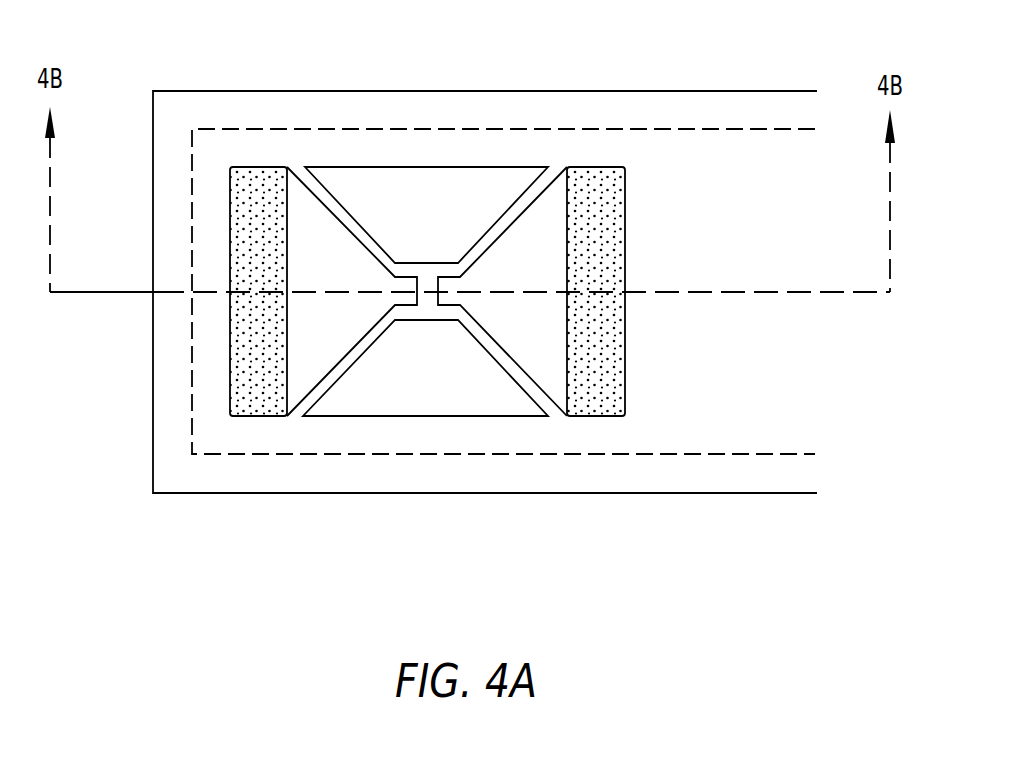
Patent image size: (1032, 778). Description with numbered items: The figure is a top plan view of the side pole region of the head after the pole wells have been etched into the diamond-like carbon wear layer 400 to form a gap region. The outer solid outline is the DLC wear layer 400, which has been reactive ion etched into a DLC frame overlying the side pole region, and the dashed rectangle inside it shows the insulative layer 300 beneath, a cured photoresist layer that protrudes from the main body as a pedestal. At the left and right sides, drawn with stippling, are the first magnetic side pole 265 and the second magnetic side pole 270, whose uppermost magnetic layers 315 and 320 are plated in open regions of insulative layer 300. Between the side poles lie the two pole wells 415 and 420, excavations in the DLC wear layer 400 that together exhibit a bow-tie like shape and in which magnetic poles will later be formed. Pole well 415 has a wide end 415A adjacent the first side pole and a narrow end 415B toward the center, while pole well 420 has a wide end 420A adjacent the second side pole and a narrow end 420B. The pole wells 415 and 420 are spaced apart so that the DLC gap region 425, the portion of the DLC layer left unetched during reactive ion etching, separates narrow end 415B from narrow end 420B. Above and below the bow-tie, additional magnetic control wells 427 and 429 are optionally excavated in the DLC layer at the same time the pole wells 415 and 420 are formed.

The first magnetic side pole 265 is at (247, 203).
The second magnetic side pole 270 is at (607, 208).
The insulative layer 300 is at (192, 362).
The magnetic layer 315 is at (262, 182).
The magnetic layer 320 is at (593, 185).
The DLC wear layer 400 is at (153, 188).
The pole well 415 is at (323, 206).
The wide end 415A is at (257, 363).
The narrow end 415B is at (403, 297).
The pole well 420 is at (527, 208).
The wide end 420A is at (597, 363).
The narrow end 420B is at (447, 297).
The DLC gap region 425 is at (420, 334).
The magnetic control well 427 is at (420, 187).
The magnetic control well 429 is at (432, 400).